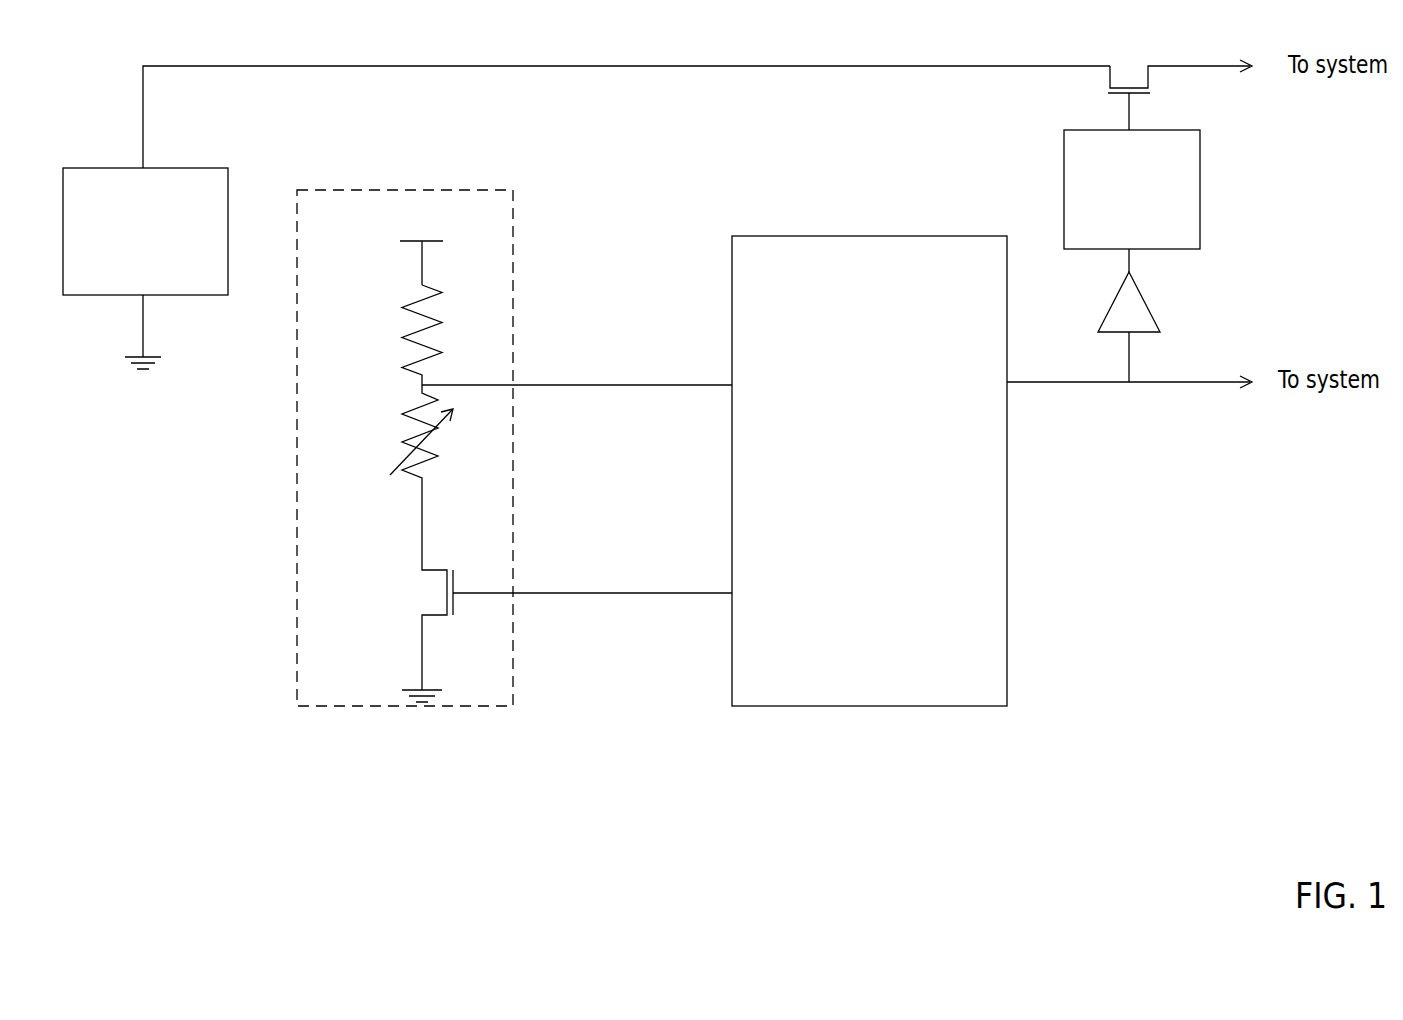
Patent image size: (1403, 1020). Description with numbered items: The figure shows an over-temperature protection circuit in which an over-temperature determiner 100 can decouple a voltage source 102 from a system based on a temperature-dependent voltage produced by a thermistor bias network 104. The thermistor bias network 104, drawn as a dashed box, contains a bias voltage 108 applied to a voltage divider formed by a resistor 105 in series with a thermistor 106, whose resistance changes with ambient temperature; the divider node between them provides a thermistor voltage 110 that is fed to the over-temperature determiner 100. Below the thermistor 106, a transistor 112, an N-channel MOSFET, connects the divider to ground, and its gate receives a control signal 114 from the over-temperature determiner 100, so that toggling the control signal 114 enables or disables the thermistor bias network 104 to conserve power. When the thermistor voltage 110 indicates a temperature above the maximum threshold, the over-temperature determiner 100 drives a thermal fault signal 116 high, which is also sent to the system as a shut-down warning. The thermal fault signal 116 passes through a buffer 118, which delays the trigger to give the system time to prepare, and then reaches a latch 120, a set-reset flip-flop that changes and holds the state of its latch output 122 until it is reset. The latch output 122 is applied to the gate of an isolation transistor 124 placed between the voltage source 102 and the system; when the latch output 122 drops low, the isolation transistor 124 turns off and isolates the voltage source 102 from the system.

The over-temperature determiner 100 is at (849, 536).
The voltage source 102 is at (125, 281).
The thermistor bias network 104 is at (330, 190).
The resistor 105 is at (387, 332).
The thermistor 106 is at (378, 445).
The bias voltage 108 is at (497, 218).
The thermistor voltage 110 is at (612, 385).
The transistor 112 is at (479, 563).
The control signal 114 is at (613, 593).
The thermal fault signal 116 is at (1110, 383).
The buffer 118 is at (1113, 329).
The latch 120 is at (1114, 217).
The latch output 122 is at (1129, 108).
The isolation transistor 124 is at (1122, 46).